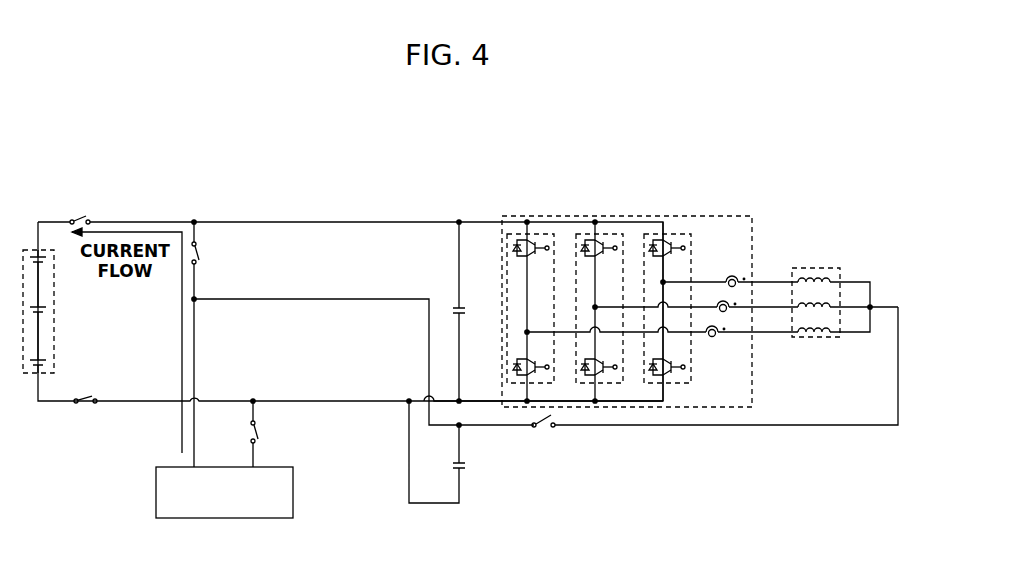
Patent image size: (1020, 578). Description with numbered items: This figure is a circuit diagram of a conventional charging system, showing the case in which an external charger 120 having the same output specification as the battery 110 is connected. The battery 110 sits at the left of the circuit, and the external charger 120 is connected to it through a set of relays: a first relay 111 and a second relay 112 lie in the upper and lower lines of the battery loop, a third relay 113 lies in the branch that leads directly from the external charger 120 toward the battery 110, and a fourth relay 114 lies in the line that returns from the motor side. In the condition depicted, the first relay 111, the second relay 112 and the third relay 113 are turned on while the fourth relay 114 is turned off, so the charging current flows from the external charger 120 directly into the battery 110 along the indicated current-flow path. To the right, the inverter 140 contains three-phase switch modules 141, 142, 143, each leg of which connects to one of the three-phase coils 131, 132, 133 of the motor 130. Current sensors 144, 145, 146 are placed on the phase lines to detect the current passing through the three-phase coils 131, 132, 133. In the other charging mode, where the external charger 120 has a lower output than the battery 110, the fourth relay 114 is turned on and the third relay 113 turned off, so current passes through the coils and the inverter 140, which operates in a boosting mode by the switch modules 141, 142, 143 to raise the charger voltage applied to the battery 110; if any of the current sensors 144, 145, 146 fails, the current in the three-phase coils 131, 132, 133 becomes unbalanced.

The battery 110 is at (54, 318).
The first relay 111 is at (78, 219).
The second relay 112 is at (86, 398).
The third relay 113 is at (197, 246).
The fourth relay 114 is at (547, 429).
The external charger 120 is at (156, 493).
The motor 130 is at (837, 295).
The three-phase coil 131 is at (810, 280).
The three-phase coil 132 is at (826, 305).
The three-phase coil 133 is at (820, 335).
The inverter 140 is at (711, 216).
The three-phase switch module 141 is at (655, 232).
The three-phase switch module 142 is at (588, 232).
The three-phase switch module 143 is at (518, 232).
The current sensor 144 is at (736, 278).
The current sensor 145 is at (720, 302).
The current sensor 146 is at (720, 342).